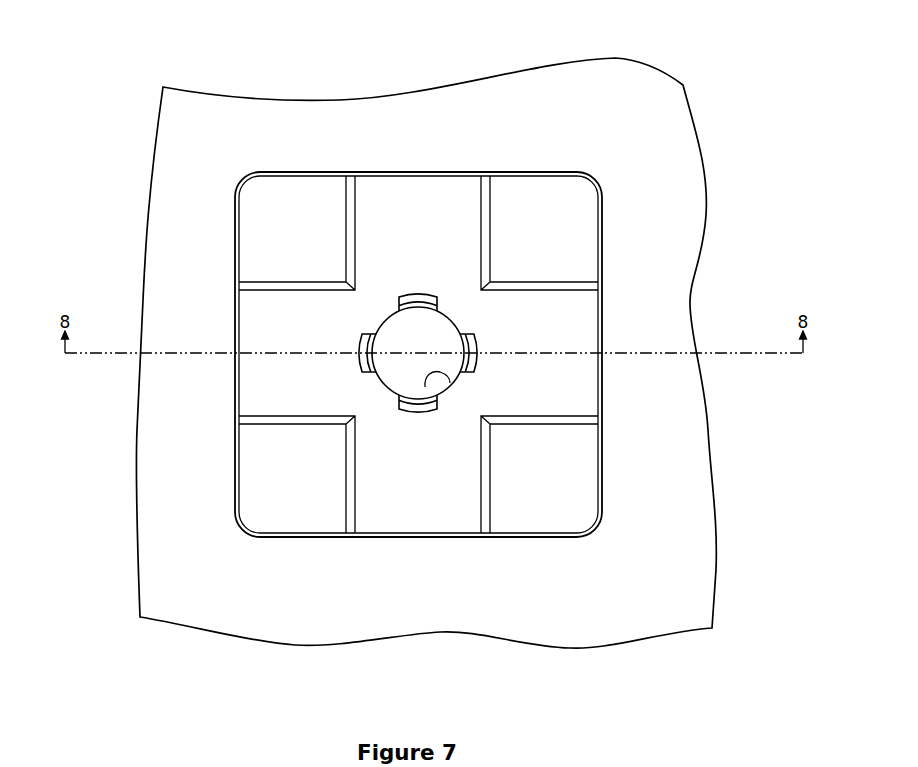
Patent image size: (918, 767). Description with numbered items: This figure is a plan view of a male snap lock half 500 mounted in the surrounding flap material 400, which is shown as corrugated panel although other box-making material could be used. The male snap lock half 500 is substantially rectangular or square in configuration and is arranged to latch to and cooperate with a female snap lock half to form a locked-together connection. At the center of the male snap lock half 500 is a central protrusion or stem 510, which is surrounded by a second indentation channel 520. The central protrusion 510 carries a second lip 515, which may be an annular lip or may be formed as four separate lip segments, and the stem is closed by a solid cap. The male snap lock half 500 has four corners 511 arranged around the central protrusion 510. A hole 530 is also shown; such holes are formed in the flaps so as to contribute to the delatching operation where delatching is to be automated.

The surrounding flap material 400 is at (653, 508).
The male snap lock half 500 is at (605, 166).
The central protrusion 510 is at (432, 323).
The corner 511 is at (282, 207).
The second lip 515 is at (413, 295).
The second indentation channel 520 is at (360, 308).
The hole 530 is at (425, 387).